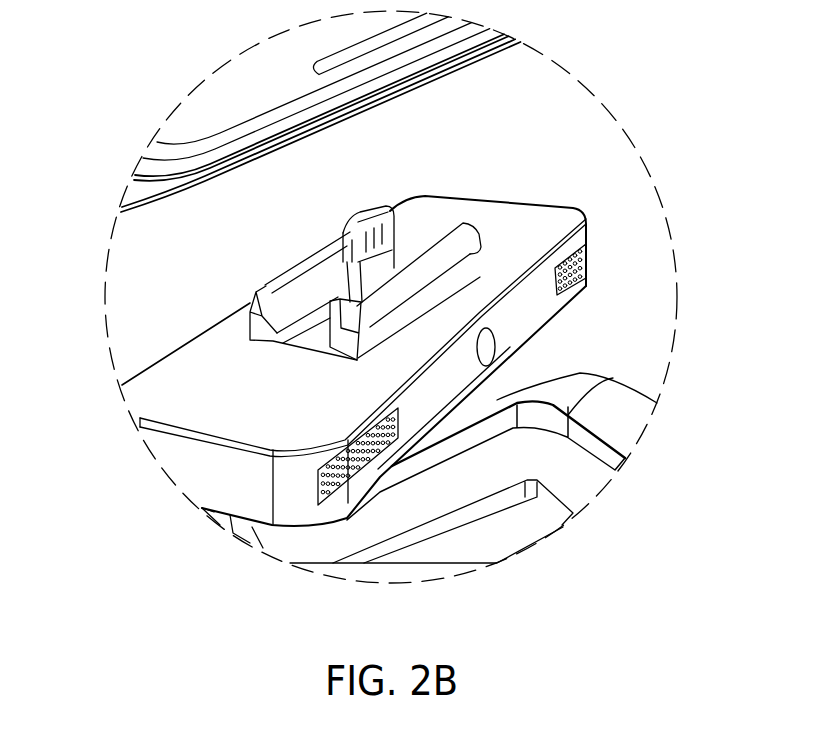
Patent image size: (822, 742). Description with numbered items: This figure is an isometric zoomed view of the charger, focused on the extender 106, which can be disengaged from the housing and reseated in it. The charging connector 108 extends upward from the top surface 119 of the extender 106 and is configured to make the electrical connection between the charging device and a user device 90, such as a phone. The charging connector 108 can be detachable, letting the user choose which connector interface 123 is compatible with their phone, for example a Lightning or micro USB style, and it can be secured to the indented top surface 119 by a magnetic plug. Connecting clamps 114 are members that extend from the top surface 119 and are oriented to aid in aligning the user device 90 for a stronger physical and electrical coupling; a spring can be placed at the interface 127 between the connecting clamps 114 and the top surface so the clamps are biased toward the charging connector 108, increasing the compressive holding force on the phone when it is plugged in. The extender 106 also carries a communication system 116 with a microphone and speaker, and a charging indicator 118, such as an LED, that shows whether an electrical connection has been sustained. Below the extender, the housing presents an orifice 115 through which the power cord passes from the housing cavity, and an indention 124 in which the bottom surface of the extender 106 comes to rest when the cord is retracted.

The user device 90 is at (208, 109).
The charging connector 108 is at (390, 194).
The connecting clamps 114 is at (474, 252).
The charging indicator 118 is at (495, 352).
The connector interface 123 is at (363, 218).
The interface 127 is at (270, 342).
The extender 106 is at (197, 415).
The top surface 119 is at (260, 438).
The communication system 116 is at (363, 472).
The orifice 115 is at (457, 513).
The indention 124 is at (580, 478).